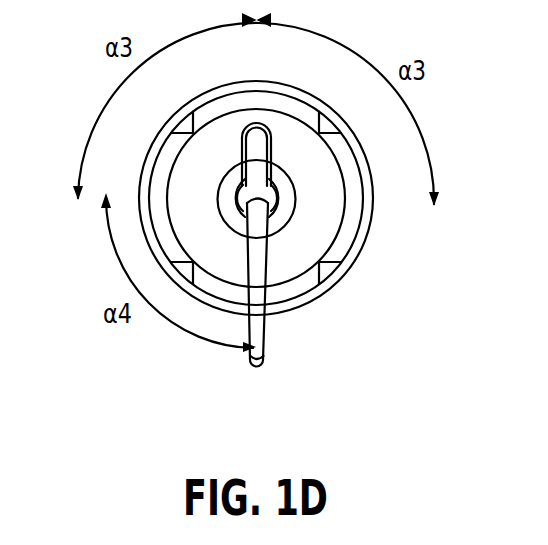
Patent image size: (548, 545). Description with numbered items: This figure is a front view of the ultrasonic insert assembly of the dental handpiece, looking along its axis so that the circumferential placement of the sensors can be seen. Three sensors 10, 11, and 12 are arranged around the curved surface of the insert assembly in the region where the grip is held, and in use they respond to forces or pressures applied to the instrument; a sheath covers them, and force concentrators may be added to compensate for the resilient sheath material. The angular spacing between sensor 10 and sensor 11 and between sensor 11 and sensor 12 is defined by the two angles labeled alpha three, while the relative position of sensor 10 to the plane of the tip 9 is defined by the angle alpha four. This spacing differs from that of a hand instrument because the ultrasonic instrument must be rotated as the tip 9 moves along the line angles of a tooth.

The tip 9 is at (263, 337).
The sensor 10 is at (163, 168).
The sensor 11 is at (285, 105).
The sensor 12 is at (355, 222).